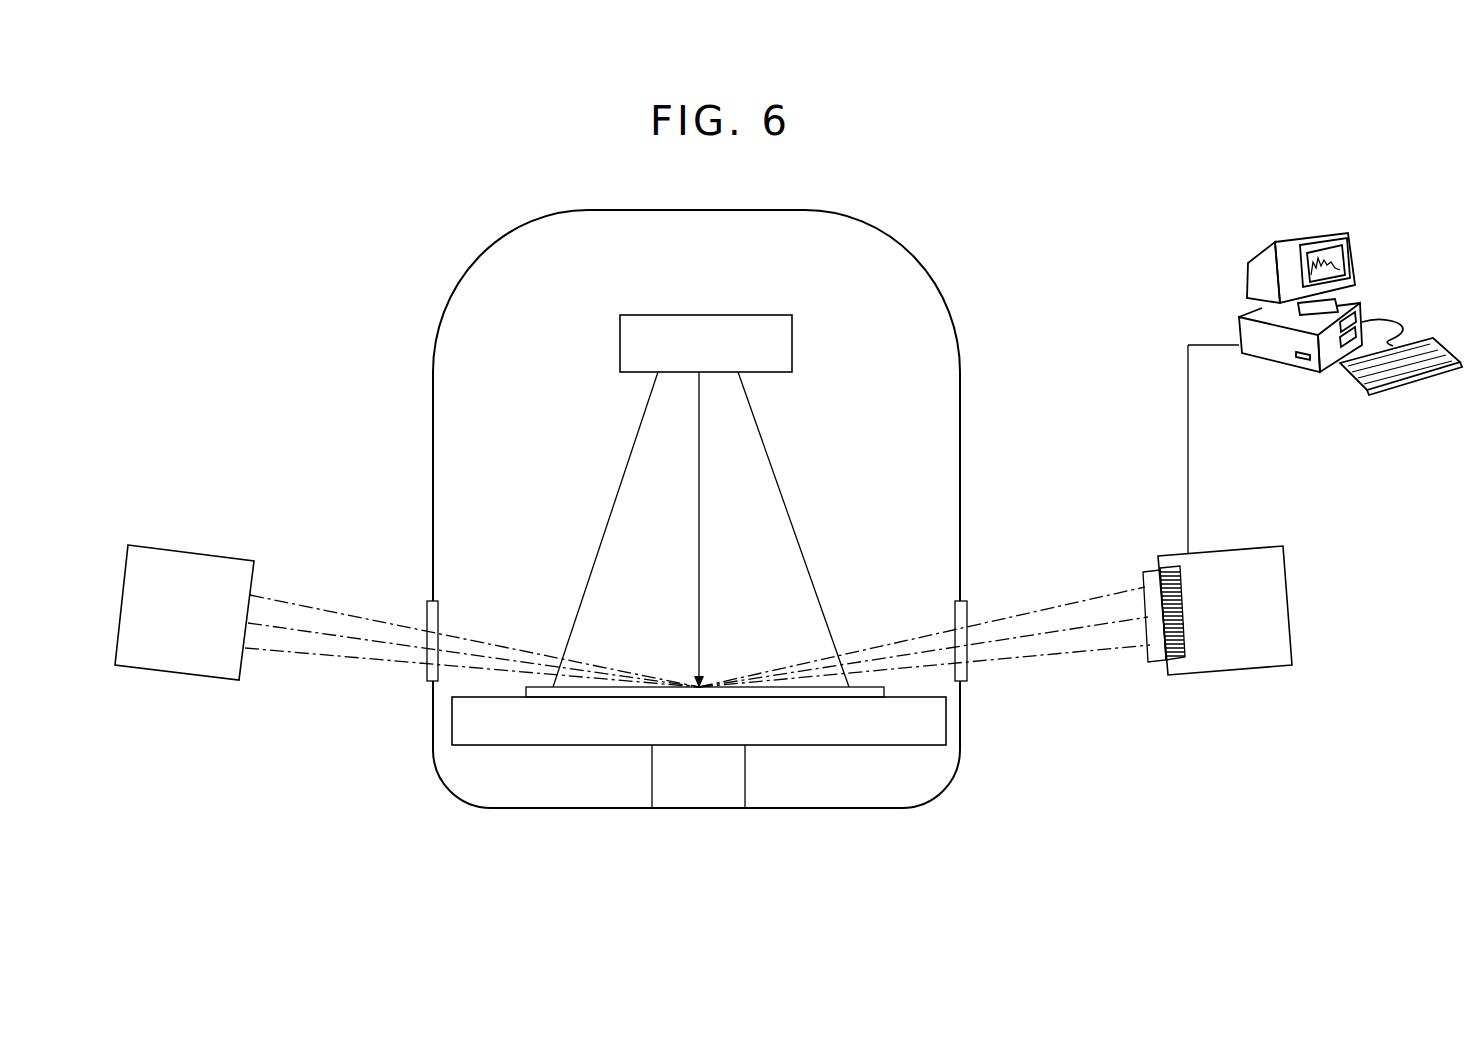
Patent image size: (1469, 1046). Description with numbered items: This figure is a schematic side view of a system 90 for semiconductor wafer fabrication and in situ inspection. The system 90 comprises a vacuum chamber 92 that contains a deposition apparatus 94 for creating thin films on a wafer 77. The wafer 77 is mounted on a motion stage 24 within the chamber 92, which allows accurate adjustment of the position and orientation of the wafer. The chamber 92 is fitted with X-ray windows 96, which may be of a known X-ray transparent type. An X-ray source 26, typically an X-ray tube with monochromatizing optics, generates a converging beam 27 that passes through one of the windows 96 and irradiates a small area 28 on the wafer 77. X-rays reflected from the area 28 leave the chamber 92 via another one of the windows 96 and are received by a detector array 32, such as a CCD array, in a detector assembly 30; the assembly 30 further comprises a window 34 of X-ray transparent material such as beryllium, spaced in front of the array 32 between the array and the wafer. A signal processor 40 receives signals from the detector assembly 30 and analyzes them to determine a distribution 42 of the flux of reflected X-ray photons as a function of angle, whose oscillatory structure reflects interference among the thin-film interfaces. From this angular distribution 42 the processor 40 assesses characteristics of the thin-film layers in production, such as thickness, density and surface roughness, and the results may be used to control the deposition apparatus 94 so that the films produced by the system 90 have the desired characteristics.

The system 90 is at (273, 247).
The vacuum chamber 92 is at (487, 263).
The deposition apparatus 94 is at (792, 343).
The X-ray windows 96 is at (440, 616).
The X-ray source 26 is at (200, 548).
The converging beam 27 is at (326, 610).
The area 28 is at (699, 690).
The motion stage 24 is at (946, 720).
The wafer 77 is at (868, 678).
The detector assembly 30 is at (1287, 583).
The window 34 is at (1143, 581).
The detector array 32 is at (1180, 607).
The signal processor 40 is at (1239, 312).
The distribution 42 is at (1313, 250).